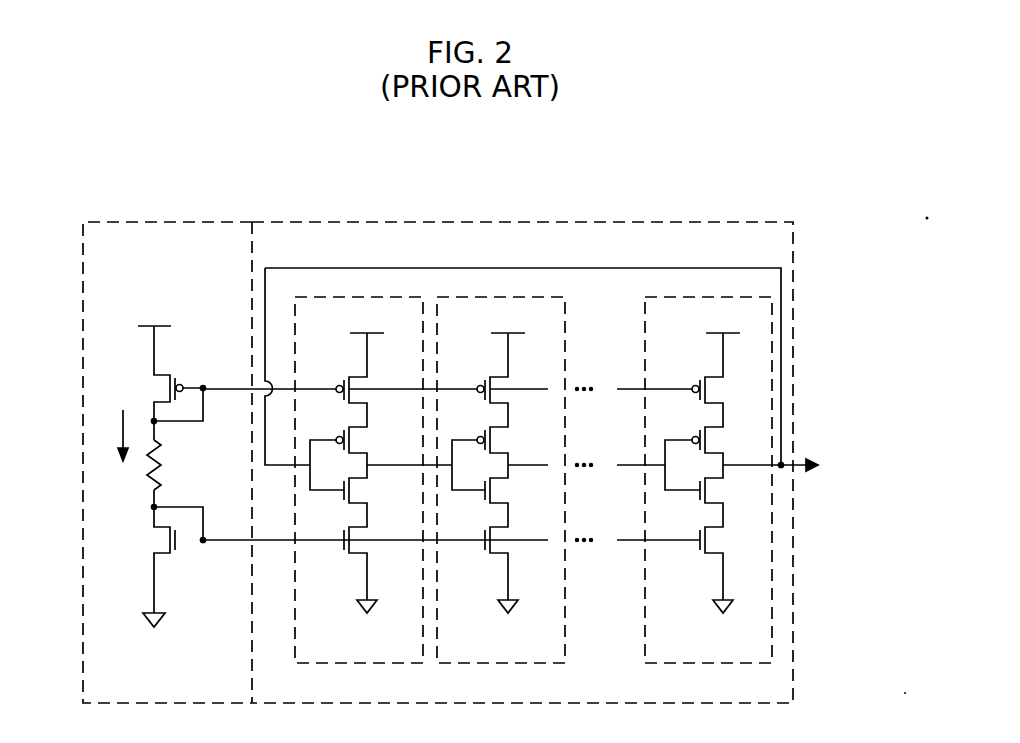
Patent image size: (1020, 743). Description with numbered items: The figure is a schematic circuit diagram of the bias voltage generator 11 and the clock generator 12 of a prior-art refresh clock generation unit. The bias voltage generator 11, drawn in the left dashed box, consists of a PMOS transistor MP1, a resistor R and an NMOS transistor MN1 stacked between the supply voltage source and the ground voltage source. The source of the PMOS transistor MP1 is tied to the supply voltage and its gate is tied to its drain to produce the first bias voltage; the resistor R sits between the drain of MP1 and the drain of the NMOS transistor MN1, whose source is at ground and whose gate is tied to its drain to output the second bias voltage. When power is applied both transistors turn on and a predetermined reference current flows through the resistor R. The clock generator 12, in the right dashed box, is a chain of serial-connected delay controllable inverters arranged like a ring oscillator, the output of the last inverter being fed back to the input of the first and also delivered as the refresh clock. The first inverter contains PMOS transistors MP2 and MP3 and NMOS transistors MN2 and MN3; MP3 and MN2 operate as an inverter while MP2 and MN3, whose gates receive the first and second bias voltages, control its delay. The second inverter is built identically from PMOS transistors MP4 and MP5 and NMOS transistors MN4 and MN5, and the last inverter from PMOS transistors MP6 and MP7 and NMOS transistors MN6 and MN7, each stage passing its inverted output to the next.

The bias voltage generator 11 is at (167, 453).
The clock generator 12 is at (554, 453).
The PMOS transistor MP1 is at (147, 383).
The NMOS transistor MN1 is at (143, 551).
The resistor R is at (162, 465).
The PMOS transistor MP2 is at (372, 374).
The PMOS transistor MP3 is at (372, 440).
The NMOS transistor MN2 is at (377, 490).
The NMOS transistor MN3 is at (377, 557).
The PMOS transistor MP4 is at (513, 374).
The PMOS transistor MP5 is at (513, 440).
The NMOS transistor MN4 is at (518, 490).
The NMOS transistor MN5 is at (518, 557).
The PMOS transistor MP6 is at (728, 374).
The PMOS transistor MP7 is at (728, 440).
The NMOS transistor MN6 is at (733, 490).
The NMOS transistor MN7 is at (733, 557).